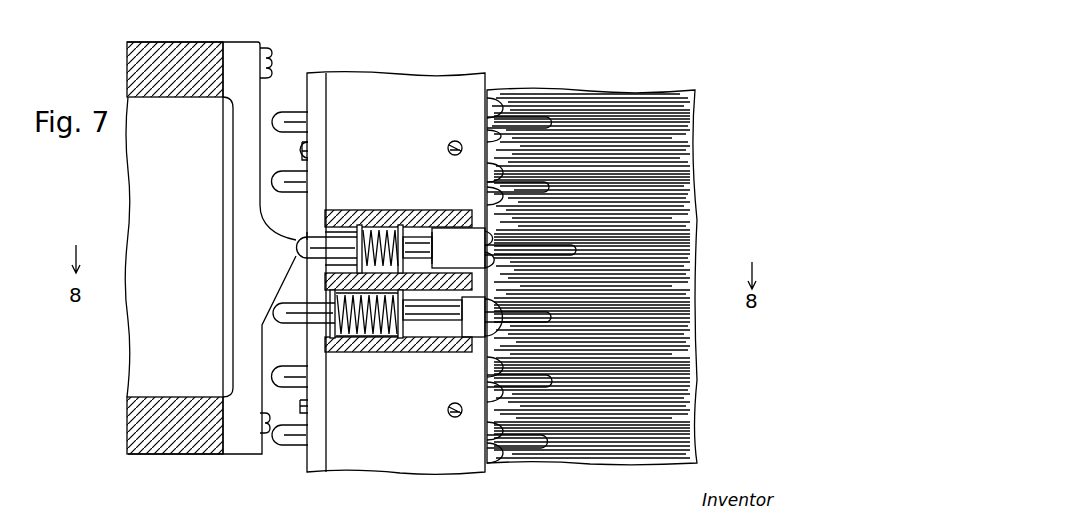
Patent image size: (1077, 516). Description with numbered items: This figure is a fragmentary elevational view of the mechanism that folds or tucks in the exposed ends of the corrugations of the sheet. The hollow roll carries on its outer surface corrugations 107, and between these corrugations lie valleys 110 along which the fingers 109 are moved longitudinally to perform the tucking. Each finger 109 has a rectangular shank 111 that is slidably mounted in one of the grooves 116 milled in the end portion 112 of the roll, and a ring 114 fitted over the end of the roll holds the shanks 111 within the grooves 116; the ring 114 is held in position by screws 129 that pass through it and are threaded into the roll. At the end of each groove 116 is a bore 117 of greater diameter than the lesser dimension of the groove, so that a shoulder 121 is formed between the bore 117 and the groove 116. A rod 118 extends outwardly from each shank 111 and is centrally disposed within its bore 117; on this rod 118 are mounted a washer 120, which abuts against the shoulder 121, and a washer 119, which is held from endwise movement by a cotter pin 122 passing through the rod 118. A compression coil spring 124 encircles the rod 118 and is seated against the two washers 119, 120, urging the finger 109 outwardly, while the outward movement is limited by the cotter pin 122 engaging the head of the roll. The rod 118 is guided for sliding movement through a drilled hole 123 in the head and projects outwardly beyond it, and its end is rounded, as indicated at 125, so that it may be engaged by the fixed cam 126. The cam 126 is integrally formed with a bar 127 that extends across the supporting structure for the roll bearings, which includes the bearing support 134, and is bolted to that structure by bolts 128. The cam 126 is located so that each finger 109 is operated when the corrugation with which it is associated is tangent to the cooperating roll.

The corrugations 107 is at (653, 95).
The fingers 109 is at (526, 118).
The valleys 110 is at (683, 130).
The rectangular shanks 111 is at (457, 240).
The end portion 112 is at (423, 212).
The ring 114 is at (375, 447).
The grooves 116 is at (413, 236).
The bores 117 is at (338, 231).
The washer 119 is at (363, 226).
The washer 120 is at (397, 228).
The shoulders 121 is at (443, 262).
The cotter pins 122 is at (328, 297).
The drilled holes 123 is at (325, 240).
The compression coil springs 124 is at (382, 334).
The rounded ends 125 is at (277, 112).
The fixed cam 126 is at (288, 247).
The bar 127 is at (250, 160).
The bolts 128 is at (269, 60).
The screws 129 is at (455, 141).
The bearing support 134 is at (148, 323).
The rod 118 is at (317, 245).